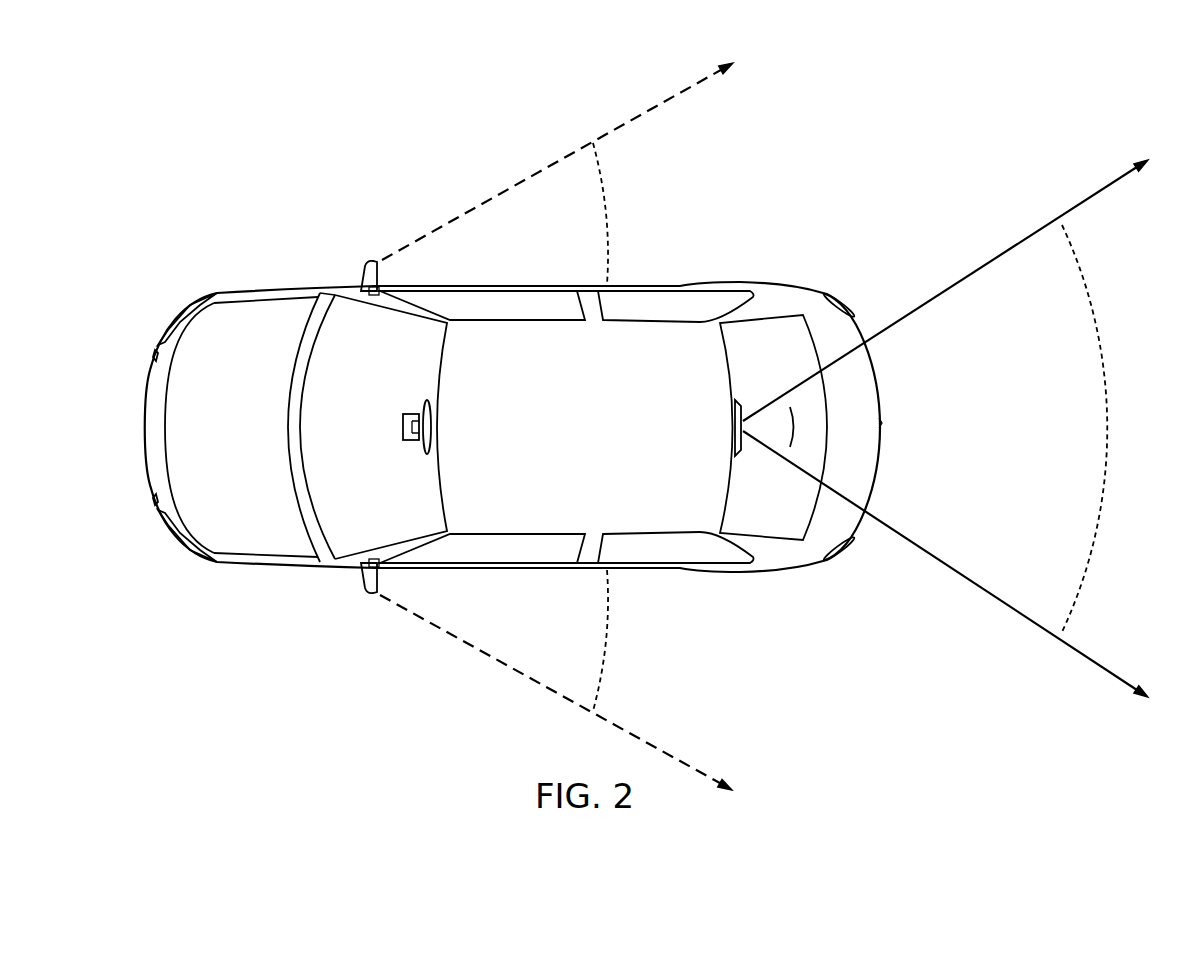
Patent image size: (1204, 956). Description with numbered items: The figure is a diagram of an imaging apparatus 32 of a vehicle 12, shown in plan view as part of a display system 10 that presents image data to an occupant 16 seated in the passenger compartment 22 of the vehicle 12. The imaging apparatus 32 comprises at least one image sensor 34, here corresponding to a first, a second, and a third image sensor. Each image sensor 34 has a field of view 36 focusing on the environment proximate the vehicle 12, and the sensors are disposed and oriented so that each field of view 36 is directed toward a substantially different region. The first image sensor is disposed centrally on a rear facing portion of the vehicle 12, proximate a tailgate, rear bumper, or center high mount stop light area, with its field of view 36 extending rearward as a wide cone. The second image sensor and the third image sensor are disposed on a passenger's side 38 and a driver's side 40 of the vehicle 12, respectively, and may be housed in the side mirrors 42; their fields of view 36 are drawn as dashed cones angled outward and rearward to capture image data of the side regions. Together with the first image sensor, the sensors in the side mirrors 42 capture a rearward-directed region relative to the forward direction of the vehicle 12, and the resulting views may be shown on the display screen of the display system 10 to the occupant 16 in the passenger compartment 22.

The display system 10 is at (217, 133).
The vehicle 12 is at (230, 323).
The occupant 16 is at (375, 399).
The passenger compartment 22 is at (425, 401).
The imaging apparatus 32 is at (297, 272).
The image sensor 34 is at (605, 412).
The field of view 36 is at (609, 212).
The passenger's side 38 is at (347, 257).
The driver's side 40 is at (307, 592).
The side mirrors 42 is at (378, 290).